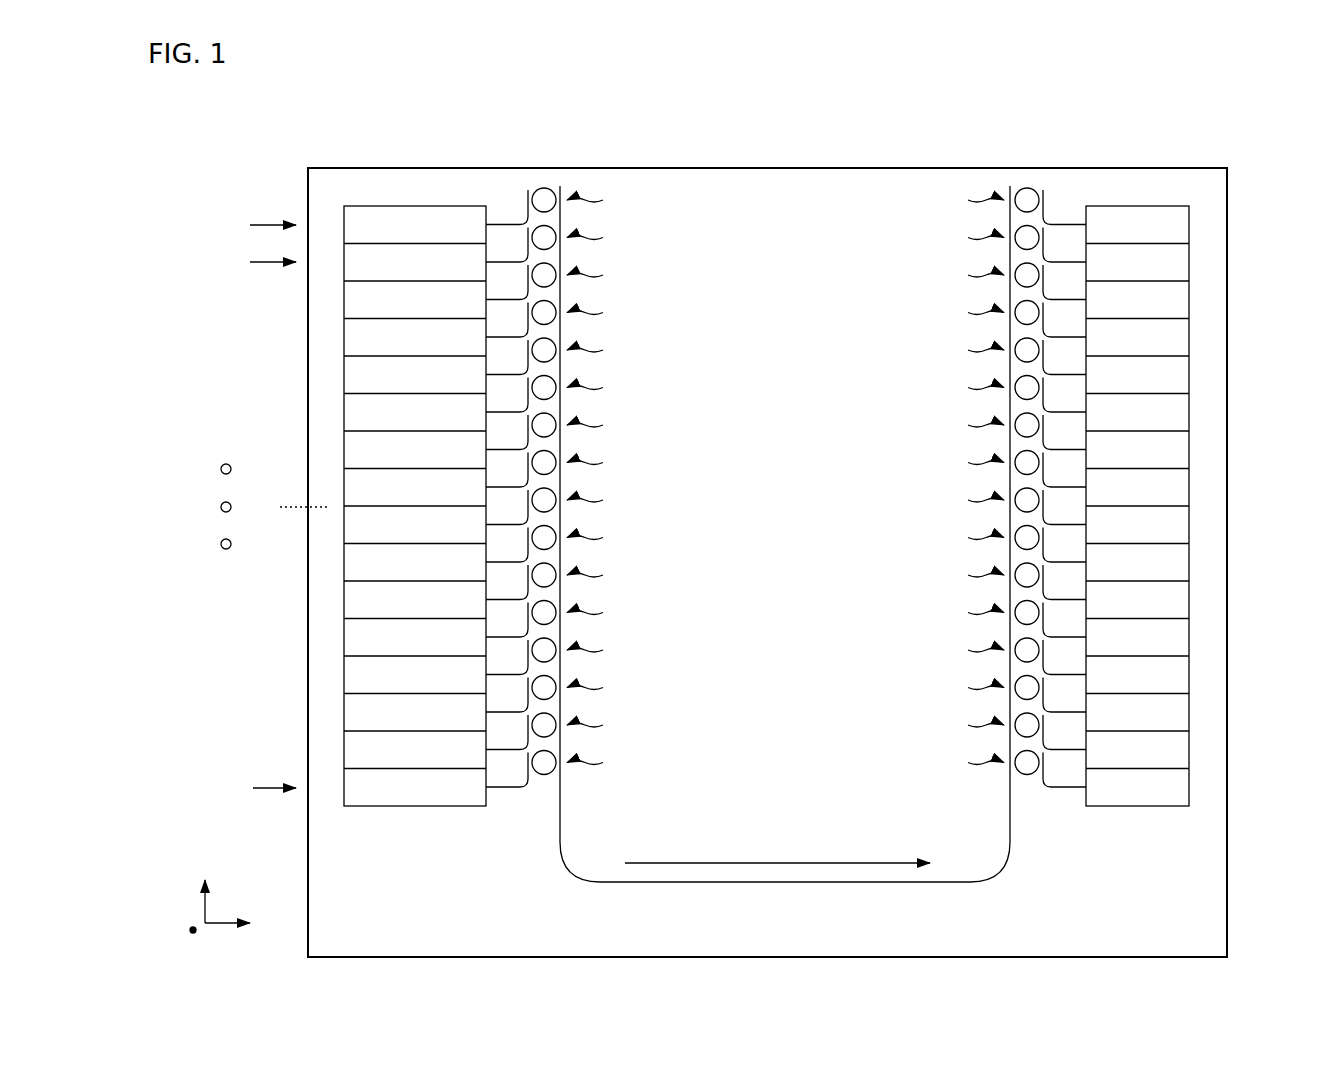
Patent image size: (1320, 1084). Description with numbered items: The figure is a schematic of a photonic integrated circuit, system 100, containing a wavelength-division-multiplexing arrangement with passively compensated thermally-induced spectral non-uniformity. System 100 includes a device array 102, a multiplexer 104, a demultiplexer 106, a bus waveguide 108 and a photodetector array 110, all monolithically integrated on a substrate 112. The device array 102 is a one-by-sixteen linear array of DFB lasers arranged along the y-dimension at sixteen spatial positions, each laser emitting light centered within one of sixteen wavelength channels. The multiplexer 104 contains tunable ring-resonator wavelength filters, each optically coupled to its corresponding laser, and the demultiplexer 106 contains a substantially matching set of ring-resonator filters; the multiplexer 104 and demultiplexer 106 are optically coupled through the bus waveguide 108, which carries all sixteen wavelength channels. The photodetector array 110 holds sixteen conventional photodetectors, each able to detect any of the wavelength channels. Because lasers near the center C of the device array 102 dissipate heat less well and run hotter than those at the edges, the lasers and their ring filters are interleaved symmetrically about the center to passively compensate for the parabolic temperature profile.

The system 100 is at (259, 151).
The device array 102 is at (411, 187).
The multiplexer 104 is at (637, 160).
The demultiplexer 106 is at (899, 160).
The bus waveguide 108 is at (813, 882).
The photodetector array 110 is at (1153, 187).
The substrate 112 is at (515, 914).